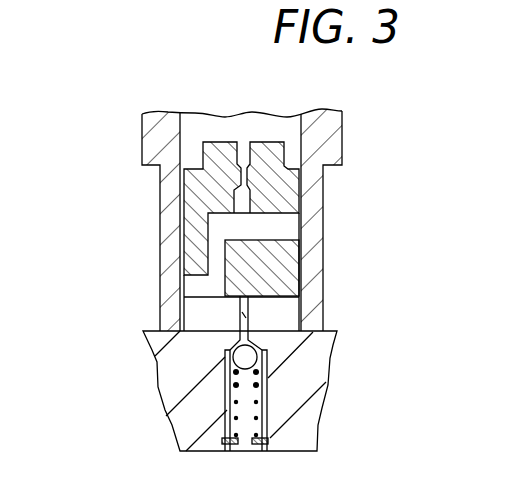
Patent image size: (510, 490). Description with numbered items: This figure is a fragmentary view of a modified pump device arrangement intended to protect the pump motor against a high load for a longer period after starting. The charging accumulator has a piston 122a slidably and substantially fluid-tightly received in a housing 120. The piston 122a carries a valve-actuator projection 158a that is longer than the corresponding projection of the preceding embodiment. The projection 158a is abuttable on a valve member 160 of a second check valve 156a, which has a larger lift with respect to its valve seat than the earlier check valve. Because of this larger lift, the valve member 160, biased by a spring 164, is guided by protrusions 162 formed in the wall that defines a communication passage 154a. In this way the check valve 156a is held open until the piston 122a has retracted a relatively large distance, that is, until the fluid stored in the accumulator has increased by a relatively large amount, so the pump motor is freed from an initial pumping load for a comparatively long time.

The housing 120 is at (311, 200).
The piston 122a is at (282, 268).
The valve-actuator projection 158a is at (249, 320).
The valve member 160 is at (250, 356).
The spring 164 is at (258, 383).
The communication passage 154a is at (243, 421).
The second check valve 156a is at (212, 373).
The protrusions 162 is at (227, 407).